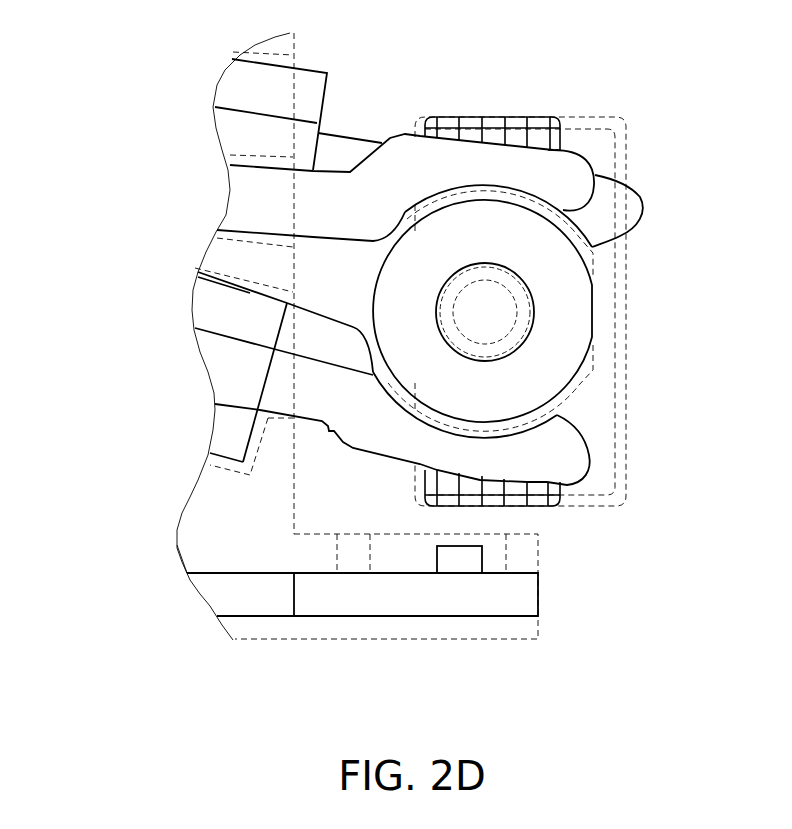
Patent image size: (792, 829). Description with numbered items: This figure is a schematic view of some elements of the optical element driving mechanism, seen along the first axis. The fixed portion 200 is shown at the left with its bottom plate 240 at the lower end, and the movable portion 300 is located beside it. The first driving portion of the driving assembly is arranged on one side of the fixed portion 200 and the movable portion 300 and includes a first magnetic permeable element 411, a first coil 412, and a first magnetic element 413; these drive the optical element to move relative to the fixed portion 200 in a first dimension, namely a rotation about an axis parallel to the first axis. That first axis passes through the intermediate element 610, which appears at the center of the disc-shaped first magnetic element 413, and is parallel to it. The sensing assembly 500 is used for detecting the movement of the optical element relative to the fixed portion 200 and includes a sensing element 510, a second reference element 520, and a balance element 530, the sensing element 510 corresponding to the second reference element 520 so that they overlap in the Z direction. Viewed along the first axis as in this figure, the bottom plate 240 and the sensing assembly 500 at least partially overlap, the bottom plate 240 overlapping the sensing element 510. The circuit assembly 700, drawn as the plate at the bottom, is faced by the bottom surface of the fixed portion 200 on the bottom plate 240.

The fixed portion 200 is at (228, 505).
The bottom plate 240 is at (228, 550).
The movable portion 300 is at (603, 257).
The first magnetic permeable element 411 is at (260, 202).
The first coil 412 is at (238, 372).
The first magnetic element 413 is at (555, 286).
The sensing assembly 500 is at (656, 543).
The sensing element 510 is at (458, 558).
The second reference element 520 is at (473, 487).
The balance element 530 is at (514, 142).
The intermediate element 610 is at (490, 312).
The circuit assembly 700 is at (268, 593).